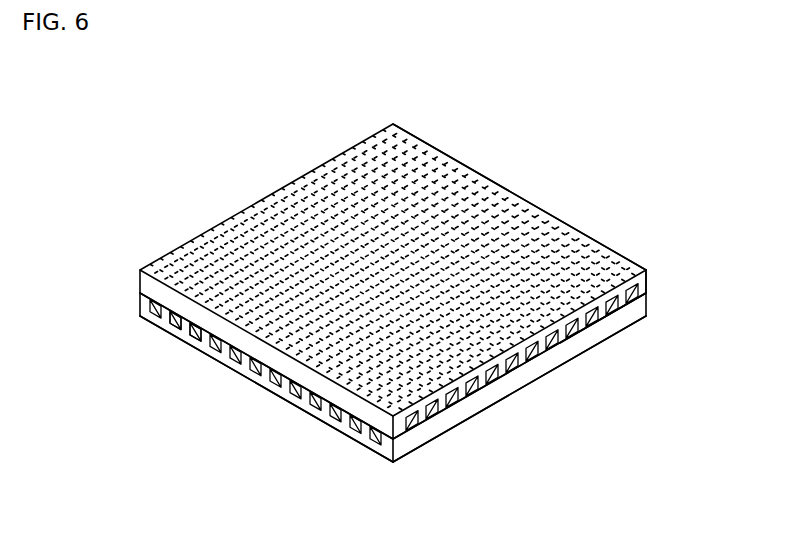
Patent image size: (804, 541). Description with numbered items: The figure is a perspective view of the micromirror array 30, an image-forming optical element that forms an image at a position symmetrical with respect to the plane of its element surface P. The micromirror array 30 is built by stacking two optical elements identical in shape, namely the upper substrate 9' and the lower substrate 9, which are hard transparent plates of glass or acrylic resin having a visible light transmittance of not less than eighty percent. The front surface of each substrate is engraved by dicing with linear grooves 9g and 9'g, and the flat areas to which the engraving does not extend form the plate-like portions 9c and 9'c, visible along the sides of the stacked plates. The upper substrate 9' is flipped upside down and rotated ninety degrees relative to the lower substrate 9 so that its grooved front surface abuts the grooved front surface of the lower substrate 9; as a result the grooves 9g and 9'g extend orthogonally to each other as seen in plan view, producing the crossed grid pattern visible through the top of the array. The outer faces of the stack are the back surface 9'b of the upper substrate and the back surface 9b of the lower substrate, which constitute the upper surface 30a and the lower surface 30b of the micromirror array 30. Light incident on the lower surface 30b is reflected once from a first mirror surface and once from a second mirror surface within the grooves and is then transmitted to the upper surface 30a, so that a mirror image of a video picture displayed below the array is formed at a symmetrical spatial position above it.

The micromirror array 30 is at (272, 183).
The upper surface of the micromirror array 30a is at (347, 165).
The lower surface of the micromirror array 30b is at (353, 441).
The upper substrate 9' is at (395, 305).
The lower substrate 9 is at (393, 380).
The back surface of the upper substrate 9'b is at (519, 197).
The plate-like portion of the upper substrate 9'c is at (624, 323).
The linear grooves of the upper substrate 9'g is at (522, 385).
The back surface of the lower substrate 9b is at (522, 372).
The plate-like portion of the lower substrate 9c is at (220, 350).
The linear grooves of the lower substrate 9g is at (258, 378).
The element surface P is at (187, 324).